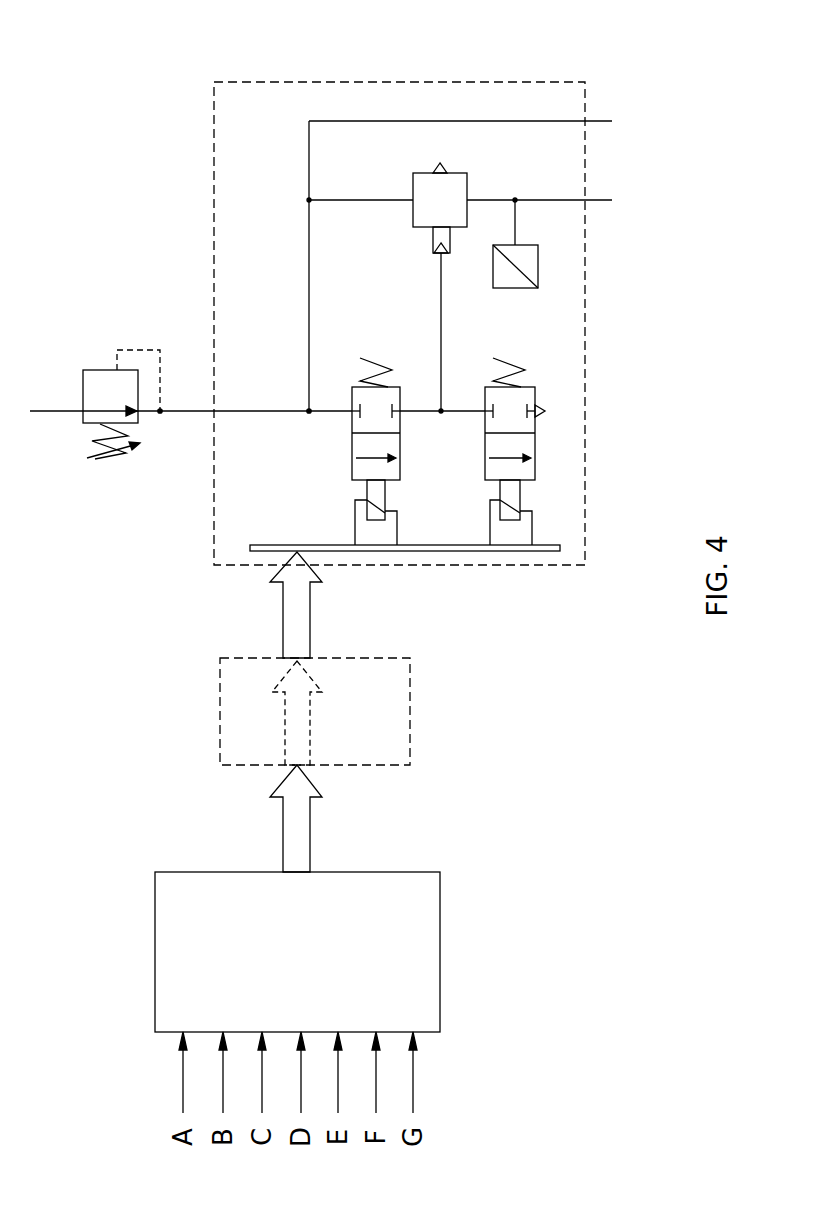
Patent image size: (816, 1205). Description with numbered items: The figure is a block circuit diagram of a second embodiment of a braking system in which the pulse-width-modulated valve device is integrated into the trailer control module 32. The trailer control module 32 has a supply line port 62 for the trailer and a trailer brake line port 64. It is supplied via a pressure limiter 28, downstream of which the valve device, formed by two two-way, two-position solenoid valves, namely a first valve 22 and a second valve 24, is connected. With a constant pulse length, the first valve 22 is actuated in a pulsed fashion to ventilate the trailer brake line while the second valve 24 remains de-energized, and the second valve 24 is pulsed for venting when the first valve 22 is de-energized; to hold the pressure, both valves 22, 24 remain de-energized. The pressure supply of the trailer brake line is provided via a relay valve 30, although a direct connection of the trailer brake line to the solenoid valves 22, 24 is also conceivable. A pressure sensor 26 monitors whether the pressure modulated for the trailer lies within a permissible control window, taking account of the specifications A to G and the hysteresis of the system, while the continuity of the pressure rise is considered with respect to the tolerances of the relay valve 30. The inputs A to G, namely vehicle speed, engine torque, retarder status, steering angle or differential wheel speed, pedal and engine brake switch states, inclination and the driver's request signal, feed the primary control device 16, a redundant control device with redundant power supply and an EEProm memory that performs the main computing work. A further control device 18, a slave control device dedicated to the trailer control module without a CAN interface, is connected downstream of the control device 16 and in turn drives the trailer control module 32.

The control device 16 is at (440, 957).
The further control device 18 is at (410, 720).
The first 2/2-way valve 22 is at (352, 463).
The second 2/2-way valve 24 is at (485, 463).
The pressure sensor 26 is at (538, 288).
The pressure limiter 28 is at (83, 390).
The relay valve 30 is at (467, 184).
The trailer control module 32 is at (373, 82).
The supply line port 62 is at (603, 121).
The trailer brake line port 64 is at (603, 201).